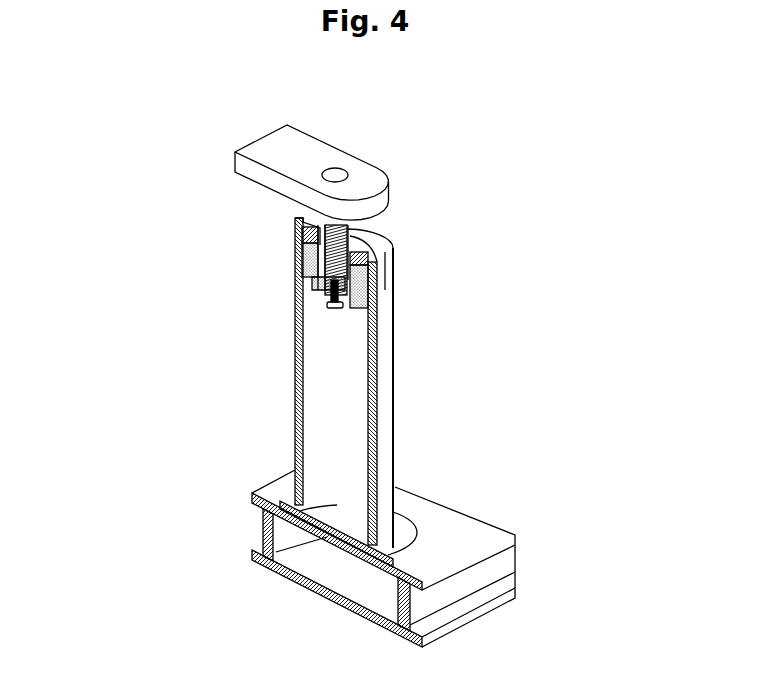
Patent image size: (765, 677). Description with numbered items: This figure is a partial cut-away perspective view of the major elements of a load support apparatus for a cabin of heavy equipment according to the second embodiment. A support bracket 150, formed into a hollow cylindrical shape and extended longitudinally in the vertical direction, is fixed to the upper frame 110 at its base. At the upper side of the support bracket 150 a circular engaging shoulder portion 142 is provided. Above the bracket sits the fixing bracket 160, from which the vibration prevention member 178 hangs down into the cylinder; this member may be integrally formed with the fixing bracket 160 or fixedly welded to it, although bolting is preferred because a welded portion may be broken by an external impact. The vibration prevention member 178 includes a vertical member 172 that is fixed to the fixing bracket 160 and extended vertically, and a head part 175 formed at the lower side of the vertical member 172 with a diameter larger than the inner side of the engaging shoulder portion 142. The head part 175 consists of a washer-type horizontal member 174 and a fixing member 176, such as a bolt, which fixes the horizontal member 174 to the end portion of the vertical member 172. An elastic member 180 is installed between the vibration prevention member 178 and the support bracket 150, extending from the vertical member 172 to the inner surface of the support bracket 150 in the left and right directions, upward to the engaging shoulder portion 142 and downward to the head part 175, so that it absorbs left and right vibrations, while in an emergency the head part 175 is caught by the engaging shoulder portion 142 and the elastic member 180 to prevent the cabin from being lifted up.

The upper frame 110 is at (482, 533).
The engaging shoulder portion 142 is at (296, 217).
The support bracket 150 is at (382, 412).
The fixing bracket 160 is at (310, 155).
The vertical member 172 is at (340, 239).
The horizontal member 174 is at (343, 307).
The head part 175 is at (449, 322).
The fixing member 176 is at (337, 310).
The vibration prevention member 178 is at (470, 230).
The elastic member 180 is at (305, 260).